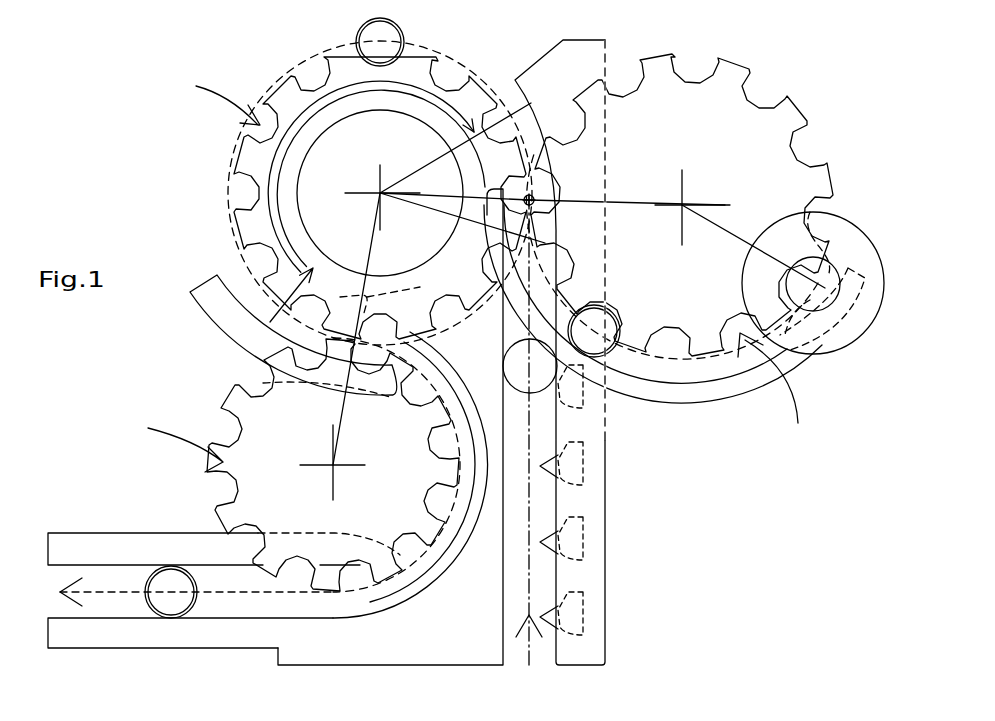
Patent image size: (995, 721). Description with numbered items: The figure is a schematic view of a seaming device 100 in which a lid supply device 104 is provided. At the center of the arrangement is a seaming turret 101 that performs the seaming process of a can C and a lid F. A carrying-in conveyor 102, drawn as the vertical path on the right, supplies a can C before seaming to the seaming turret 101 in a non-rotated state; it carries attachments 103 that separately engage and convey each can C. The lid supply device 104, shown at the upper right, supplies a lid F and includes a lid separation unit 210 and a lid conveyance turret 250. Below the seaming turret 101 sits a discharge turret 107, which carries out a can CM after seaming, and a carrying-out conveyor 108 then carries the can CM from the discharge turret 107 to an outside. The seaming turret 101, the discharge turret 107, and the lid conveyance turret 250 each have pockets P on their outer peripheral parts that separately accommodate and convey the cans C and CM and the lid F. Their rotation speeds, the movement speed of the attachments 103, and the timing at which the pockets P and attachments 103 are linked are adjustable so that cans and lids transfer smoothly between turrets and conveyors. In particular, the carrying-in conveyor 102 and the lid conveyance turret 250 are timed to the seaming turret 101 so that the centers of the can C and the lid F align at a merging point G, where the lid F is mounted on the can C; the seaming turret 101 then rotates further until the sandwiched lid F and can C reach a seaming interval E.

The seaming device 100 is at (80, 74).
The seaming turret 101 is at (252, 153).
The carrying-in conveyor 102 is at (593, 512).
The attachments 103 is at (567, 620).
The lid supply device 104 is at (889, 73).
The discharge turret 107 is at (262, 440).
The carrying-out conveyor 108 is at (128, 537).
The lid conveyance turret 250 is at (725, 147).
The lid separation unit 210 is at (852, 233).
The pockets P is at (471, 266).
The seaming interval E is at (263, 188).
The can C is at (372, 37).
The lid F is at (660, 384).
The merging point G is at (530, 200).
The can after seaming CM is at (170, 580).